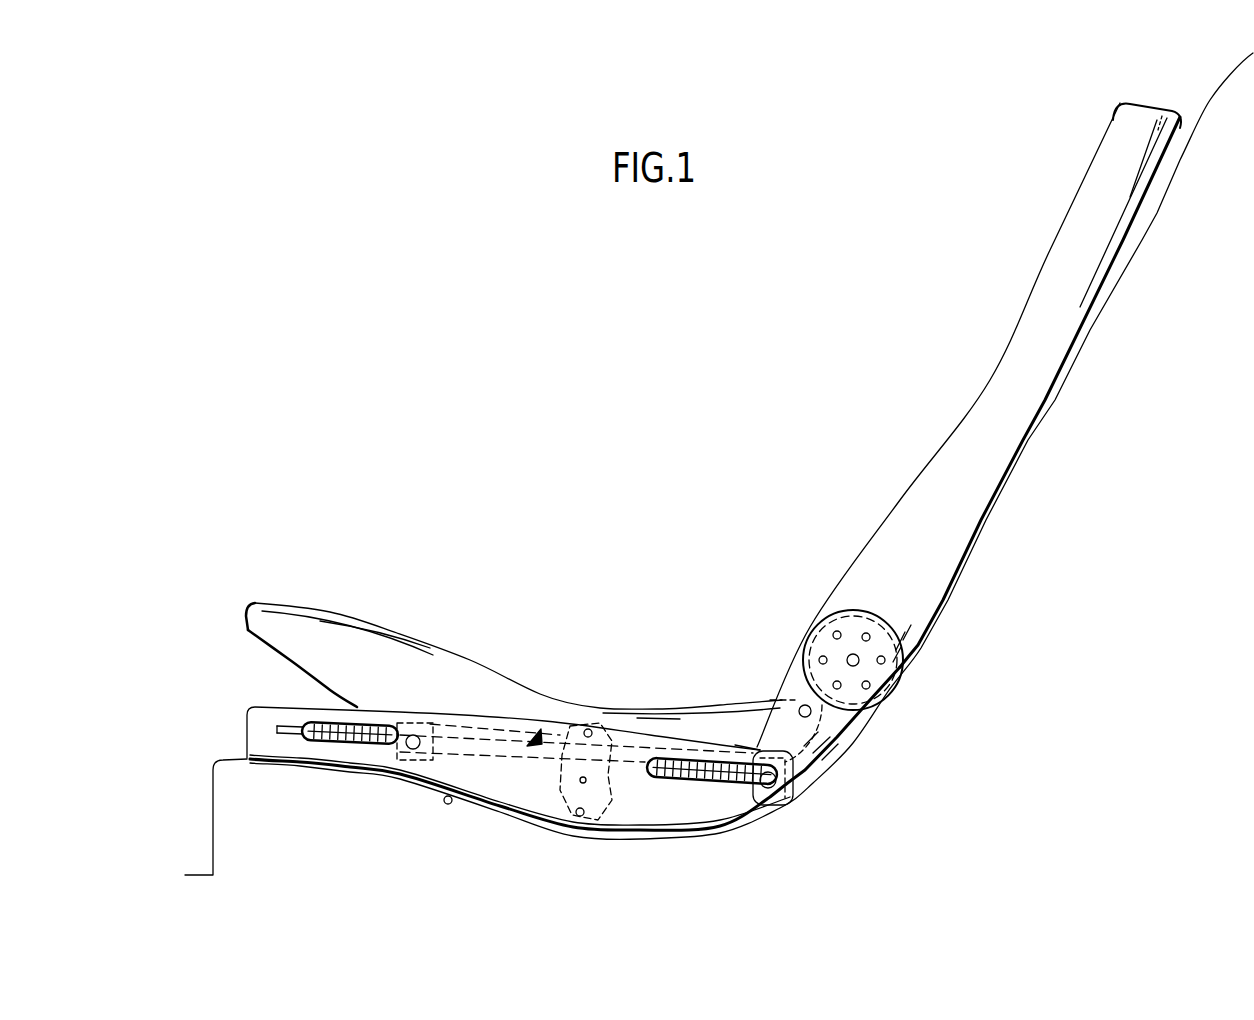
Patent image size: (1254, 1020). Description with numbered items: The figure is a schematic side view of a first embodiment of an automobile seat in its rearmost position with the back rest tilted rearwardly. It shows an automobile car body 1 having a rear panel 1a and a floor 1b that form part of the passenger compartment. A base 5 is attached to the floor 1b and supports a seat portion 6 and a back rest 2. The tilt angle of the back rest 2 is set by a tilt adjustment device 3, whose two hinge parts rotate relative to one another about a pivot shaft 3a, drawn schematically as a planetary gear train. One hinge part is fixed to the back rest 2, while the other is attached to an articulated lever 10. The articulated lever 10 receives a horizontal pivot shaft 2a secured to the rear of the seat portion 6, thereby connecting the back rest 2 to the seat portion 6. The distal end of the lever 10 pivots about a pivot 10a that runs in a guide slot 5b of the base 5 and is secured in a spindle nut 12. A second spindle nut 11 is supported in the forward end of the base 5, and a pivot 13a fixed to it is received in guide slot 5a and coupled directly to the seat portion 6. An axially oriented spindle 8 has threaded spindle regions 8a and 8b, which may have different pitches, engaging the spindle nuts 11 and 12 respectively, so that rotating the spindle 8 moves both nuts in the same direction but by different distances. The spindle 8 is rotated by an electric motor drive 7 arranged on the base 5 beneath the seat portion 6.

The automobile car body 1 is at (1186, 88).
The rear panel 1a is at (1166, 180).
The floor 1b is at (450, 806).
The back rest 2 is at (931, 420).
The horizontal pivot shaft 2a is at (803, 705).
The tilt adjustment device 3 is at (907, 665).
The pivot shaft 3a is at (855, 658).
The base 5 is at (543, 805).
The guide slot 5a is at (323, 746).
The guide slot 5b is at (712, 784).
The seat portion 6 is at (397, 645).
The electric motor drive 7 is at (617, 830).
The spindle 8 is at (553, 712).
The threaded spindle region 8a is at (497, 757).
The threaded spindle region 8b is at (637, 735).
The articulated lever 10 is at (842, 742).
The pivot 10a is at (773, 786).
The spindle nut 11 is at (393, 777).
The spindle nut 12 is at (743, 727).
The pivot 13a is at (415, 757).